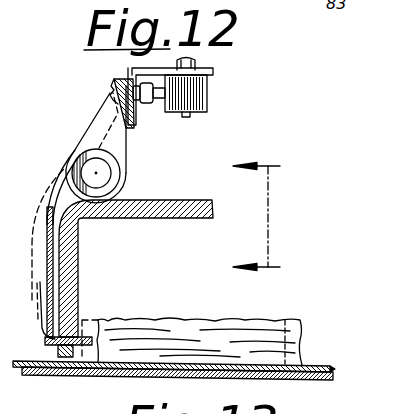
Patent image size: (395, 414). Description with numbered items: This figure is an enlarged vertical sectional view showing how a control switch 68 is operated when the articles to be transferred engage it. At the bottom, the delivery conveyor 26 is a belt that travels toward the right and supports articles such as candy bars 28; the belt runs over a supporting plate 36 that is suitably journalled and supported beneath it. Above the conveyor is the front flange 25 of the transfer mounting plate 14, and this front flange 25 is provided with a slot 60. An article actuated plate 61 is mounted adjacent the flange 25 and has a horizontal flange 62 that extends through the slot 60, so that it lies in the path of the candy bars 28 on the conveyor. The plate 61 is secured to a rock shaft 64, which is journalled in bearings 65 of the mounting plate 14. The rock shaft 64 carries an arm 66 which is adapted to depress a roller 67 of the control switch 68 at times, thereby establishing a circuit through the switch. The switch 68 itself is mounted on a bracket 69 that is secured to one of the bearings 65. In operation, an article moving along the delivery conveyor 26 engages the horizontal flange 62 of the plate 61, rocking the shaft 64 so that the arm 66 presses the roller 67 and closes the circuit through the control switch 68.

The transfer mounting plate 14 is at (267, 217).
The front flange 25 is at (76, 283).
The delivery conveyor 26 is at (323, 367).
The candy bars 28 is at (262, 320).
The supporting plate 36 is at (308, 380).
The slot 60 is at (73, 326).
The article actuated plate 61 is at (50, 256).
The horizontal flange 62 is at (103, 340).
The rock shaft 64 is at (100, 172).
The bearings 65 is at (84, 145).
The arm 66 is at (138, 127).
The roller 67 is at (120, 82).
The control switch 68 is at (205, 90).
The bracket 69 is at (214, 69).